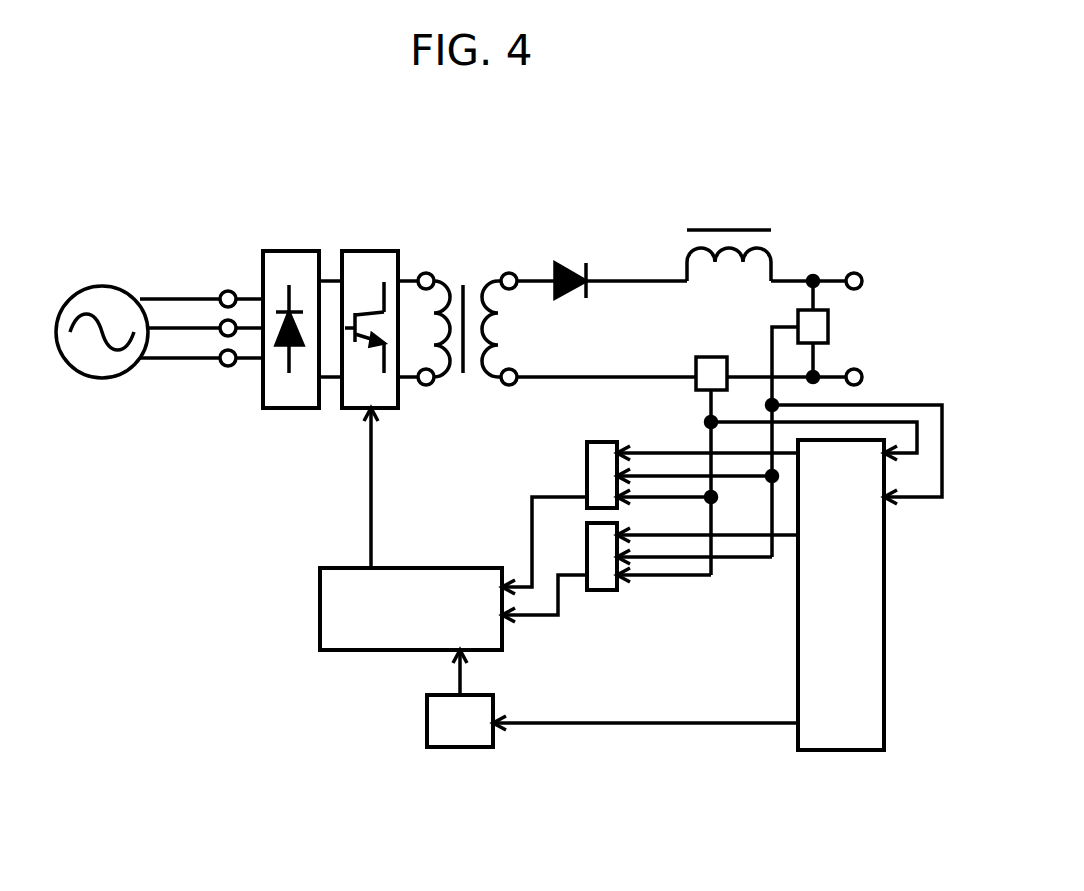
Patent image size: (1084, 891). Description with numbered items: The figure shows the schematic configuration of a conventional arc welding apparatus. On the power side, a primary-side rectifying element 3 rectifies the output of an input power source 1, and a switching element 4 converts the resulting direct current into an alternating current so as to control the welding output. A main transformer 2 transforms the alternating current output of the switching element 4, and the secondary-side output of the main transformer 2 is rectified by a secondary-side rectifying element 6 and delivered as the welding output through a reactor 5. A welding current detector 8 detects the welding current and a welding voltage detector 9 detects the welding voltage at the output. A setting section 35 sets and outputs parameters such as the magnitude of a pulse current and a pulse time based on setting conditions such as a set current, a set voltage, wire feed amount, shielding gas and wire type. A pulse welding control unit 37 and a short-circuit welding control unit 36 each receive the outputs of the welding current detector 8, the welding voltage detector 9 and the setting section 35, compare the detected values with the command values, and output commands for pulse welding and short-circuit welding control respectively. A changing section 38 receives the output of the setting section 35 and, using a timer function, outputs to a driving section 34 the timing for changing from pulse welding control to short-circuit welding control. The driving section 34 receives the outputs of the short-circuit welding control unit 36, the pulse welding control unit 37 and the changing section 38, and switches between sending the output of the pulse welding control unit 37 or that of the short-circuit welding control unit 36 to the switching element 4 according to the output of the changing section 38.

The input power source 1 is at (97, 286).
The main transformer 2 is at (474, 277).
The primary-side rectifying element 3 is at (288, 251).
The switching element 4 is at (375, 251).
The reactor 5 is at (739, 222).
The secondary-side rectifying element 6 is at (568, 260).
The welding current detector 8 is at (713, 356).
The welding voltage detector 9 is at (830, 330).
The driving section 34 is at (367, 653).
The setting section 35 is at (842, 752).
The short-circuit welding control unit 36 is at (602, 441).
The pulse welding control unit 37 is at (600, 591).
The changing section 38 is at (462, 750).